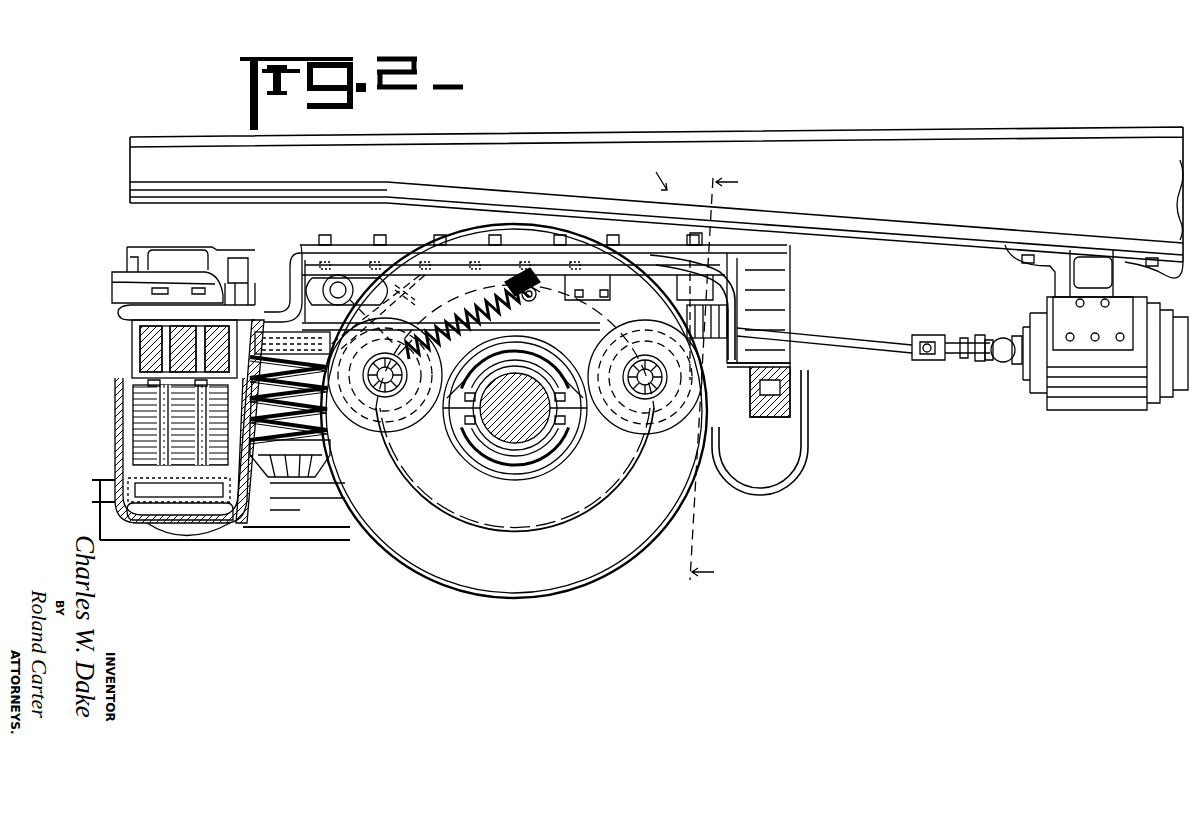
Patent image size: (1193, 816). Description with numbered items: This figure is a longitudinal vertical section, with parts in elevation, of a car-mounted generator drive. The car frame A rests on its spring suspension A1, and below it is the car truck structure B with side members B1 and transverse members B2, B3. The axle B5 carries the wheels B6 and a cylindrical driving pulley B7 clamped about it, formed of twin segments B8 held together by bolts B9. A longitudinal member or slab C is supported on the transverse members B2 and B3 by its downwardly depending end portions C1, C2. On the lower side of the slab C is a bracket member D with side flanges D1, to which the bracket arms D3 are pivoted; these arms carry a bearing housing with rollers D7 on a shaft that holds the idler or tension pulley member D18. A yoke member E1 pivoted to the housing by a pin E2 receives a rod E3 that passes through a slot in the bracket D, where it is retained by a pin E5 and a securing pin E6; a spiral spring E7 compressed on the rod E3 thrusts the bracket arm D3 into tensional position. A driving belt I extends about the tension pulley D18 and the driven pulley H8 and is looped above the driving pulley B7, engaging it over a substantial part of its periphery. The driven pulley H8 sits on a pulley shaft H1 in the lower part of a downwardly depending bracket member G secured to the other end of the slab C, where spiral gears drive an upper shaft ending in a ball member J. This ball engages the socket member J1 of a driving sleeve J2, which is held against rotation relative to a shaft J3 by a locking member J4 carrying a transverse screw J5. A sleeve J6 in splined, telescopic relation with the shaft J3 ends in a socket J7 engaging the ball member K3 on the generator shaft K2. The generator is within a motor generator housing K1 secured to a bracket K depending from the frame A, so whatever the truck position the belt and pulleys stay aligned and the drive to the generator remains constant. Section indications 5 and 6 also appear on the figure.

The car frame A is at (870, 160).
The spring suspension A1 is at (282, 485).
The car truck structure B is at (163, 283).
The side member B1 is at (238, 248).
The transverse member B2 is at (240, 322).
The transverse member B3 is at (795, 405).
The axle B5 is at (495, 430).
The wheel B6 is at (548, 580).
The driving pulley B7 is at (520, 455).
The twin segment B8 is at (545, 458).
The bolt B9 is at (580, 430).
The longitudinal member or slab C is at (527, 292).
The downwardly depending end portion C1 is at (294, 262).
The downwardly depending end portion C2 is at (800, 312).
The bracket member D is at (478, 258).
The side flange D1 is at (437, 260).
The bracket arm D3 is at (368, 270).
The roller D7 is at (333, 495).
The pulley member D18 is at (312, 404).
The yoke member E1 is at (430, 430).
The pin E2 is at (413, 291).
The rod E3 is at (508, 262).
The pin E5 is at (582, 303).
The securing pin E6 is at (532, 300).
The spiral spring E7 is at (478, 319).
The bracket member G is at (642, 268).
The pulley shaft H1 is at (690, 395).
The pulley H8 is at (668, 425).
The driving belt I is at (605, 335).
The ball member J is at (745, 290).
The socket member J1 is at (742, 300).
The driving sleeve J2 is at (860, 335).
The shaft J3 is at (952, 337).
The locking member J4 is at (903, 356).
The transverse screw J5 is at (922, 362).
The sleeve J6 is at (966, 338).
The socket J7 is at (985, 335).
The bracket K is at (1065, 270).
The motor generator housing K1 is at (1092, 390).
The generator shaft K2 is at (1015, 355).
The ball member K3 is at (995, 360).
The section line 5 is at (505, 300).
The section line 6 is at (710, 383).